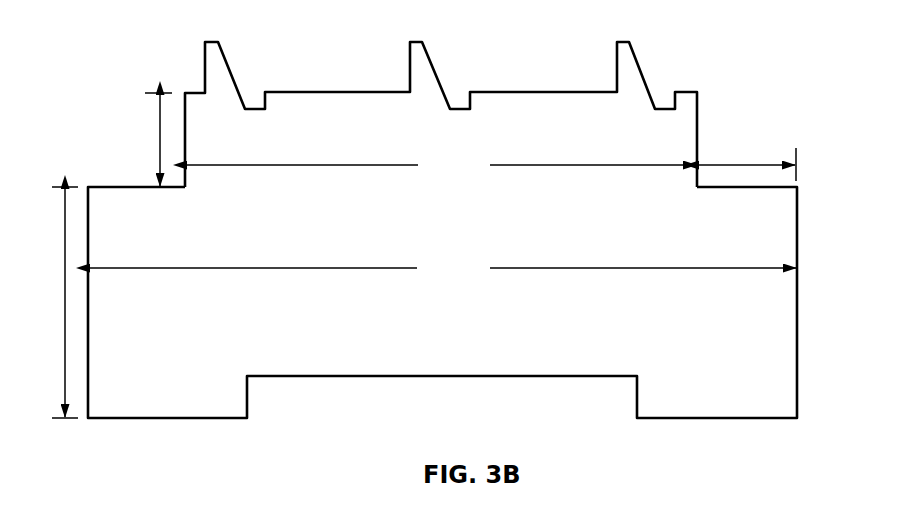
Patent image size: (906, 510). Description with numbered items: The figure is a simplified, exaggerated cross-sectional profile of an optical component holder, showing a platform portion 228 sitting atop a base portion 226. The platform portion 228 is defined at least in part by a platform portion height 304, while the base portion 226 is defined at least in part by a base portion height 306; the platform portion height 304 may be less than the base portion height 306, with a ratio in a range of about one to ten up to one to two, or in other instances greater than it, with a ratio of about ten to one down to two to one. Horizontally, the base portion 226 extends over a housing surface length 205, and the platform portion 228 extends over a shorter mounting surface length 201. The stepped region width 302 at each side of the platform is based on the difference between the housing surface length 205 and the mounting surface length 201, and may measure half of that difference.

The mounting surface length 201 is at (441, 166).
The housing surface length 205 is at (442, 269).
The base portion 226 is at (517, 318).
The platform portion 228 is at (521, 142).
The stepped region width 302 is at (751, 163).
The platform portion height 304 is at (158, 137).
The base portion height 306 is at (68, 280).